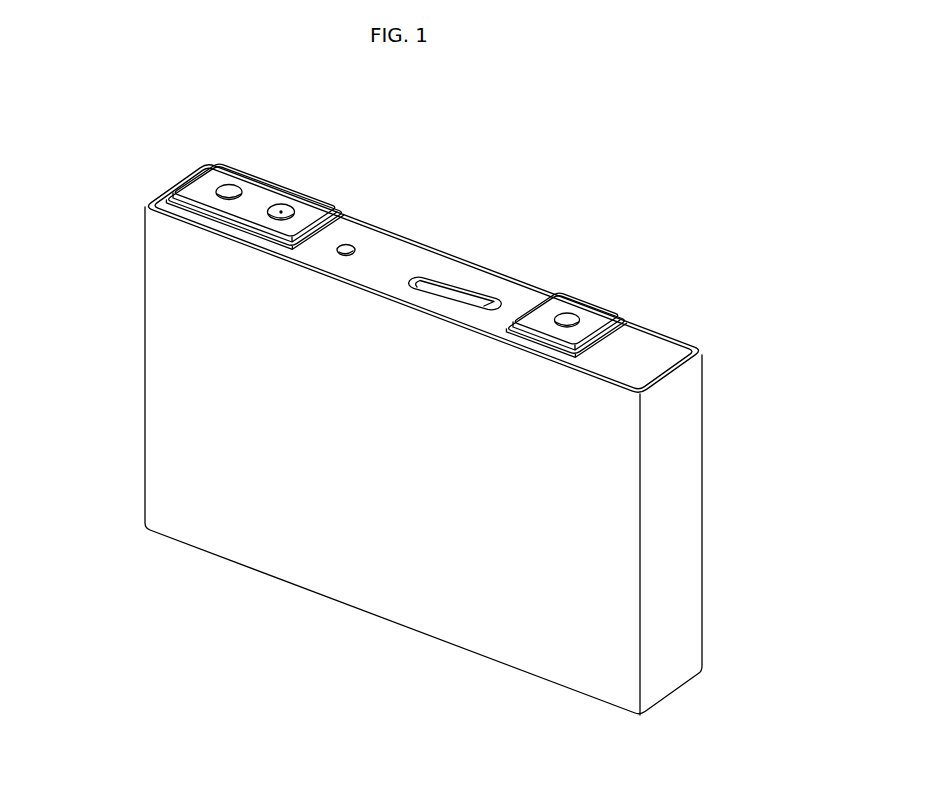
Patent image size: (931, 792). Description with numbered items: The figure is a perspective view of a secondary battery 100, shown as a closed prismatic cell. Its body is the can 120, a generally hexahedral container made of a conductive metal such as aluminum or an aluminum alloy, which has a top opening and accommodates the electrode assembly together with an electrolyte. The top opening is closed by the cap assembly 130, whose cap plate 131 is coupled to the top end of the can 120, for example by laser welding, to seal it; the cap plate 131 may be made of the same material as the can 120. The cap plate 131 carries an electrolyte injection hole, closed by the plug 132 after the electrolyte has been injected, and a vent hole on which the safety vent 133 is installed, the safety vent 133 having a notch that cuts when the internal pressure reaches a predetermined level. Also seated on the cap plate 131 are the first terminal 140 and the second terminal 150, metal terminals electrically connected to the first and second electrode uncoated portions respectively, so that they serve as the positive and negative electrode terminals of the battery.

The secondary battery 100 is at (128, 96).
The can 120 is at (681, 542).
The cap assembly 130 is at (426, 265).
The cap plate 131 is at (660, 345).
The plug 132 is at (348, 240).
The safety vent 133 is at (455, 294).
The first terminal 140 is at (265, 195).
The second terminal 150 is at (577, 311).